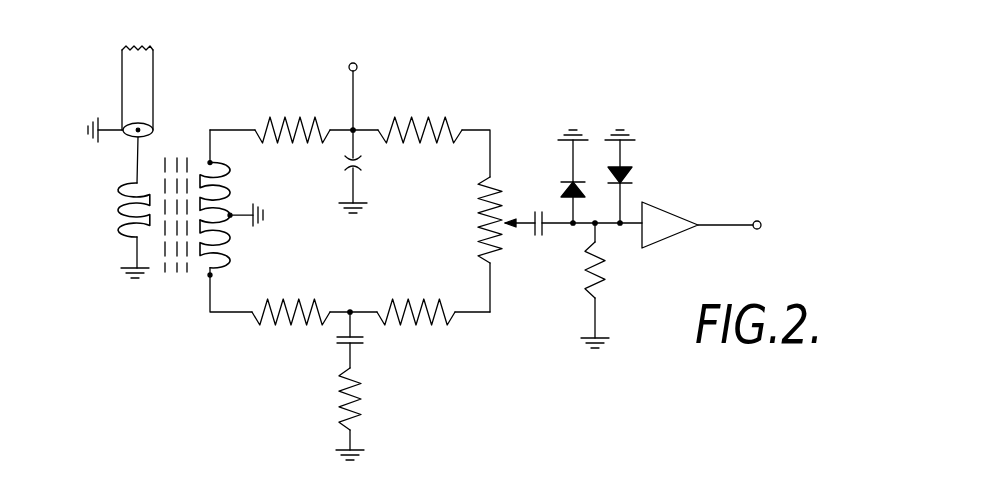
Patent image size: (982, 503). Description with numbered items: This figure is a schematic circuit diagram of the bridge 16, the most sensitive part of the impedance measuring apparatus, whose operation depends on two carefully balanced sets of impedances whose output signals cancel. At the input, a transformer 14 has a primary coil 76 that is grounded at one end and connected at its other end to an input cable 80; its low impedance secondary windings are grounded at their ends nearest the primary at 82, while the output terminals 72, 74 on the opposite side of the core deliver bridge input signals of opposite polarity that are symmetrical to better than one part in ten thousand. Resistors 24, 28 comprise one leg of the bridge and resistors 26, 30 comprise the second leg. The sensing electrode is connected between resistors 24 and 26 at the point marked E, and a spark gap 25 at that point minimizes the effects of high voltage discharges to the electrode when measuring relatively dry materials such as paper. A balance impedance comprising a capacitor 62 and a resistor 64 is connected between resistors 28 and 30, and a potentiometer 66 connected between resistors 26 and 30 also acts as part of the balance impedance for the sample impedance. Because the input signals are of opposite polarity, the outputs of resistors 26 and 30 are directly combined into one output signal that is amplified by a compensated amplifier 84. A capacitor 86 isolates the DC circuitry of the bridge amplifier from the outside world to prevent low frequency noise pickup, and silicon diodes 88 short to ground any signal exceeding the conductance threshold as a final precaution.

The transformer 14 is at (175, 285).
The bridge 16 is at (484, 108).
The resistor 24 is at (283, 147).
The spark gap 25 is at (362, 163).
The resistor 26 is at (428, 143).
The resistor 28 is at (274, 310).
The resistor 30 is at (430, 306).
The capacitor 62 is at (357, 346).
The resistor 64 is at (380, 392).
The potentiometer 66 is at (488, 244).
The output terminal 72 is at (222, 152).
The output terminal 74 is at (214, 278).
The primary coil 76 is at (126, 220).
The input cable 80 is at (141, 92).
The ground 82 is at (243, 210).
The compensated amplifier 84 is at (658, 230).
The capacitor 86 is at (545, 234).
The silicon diodes 88 is at (562, 190).
The voltage source terminal E is at (363, 92).